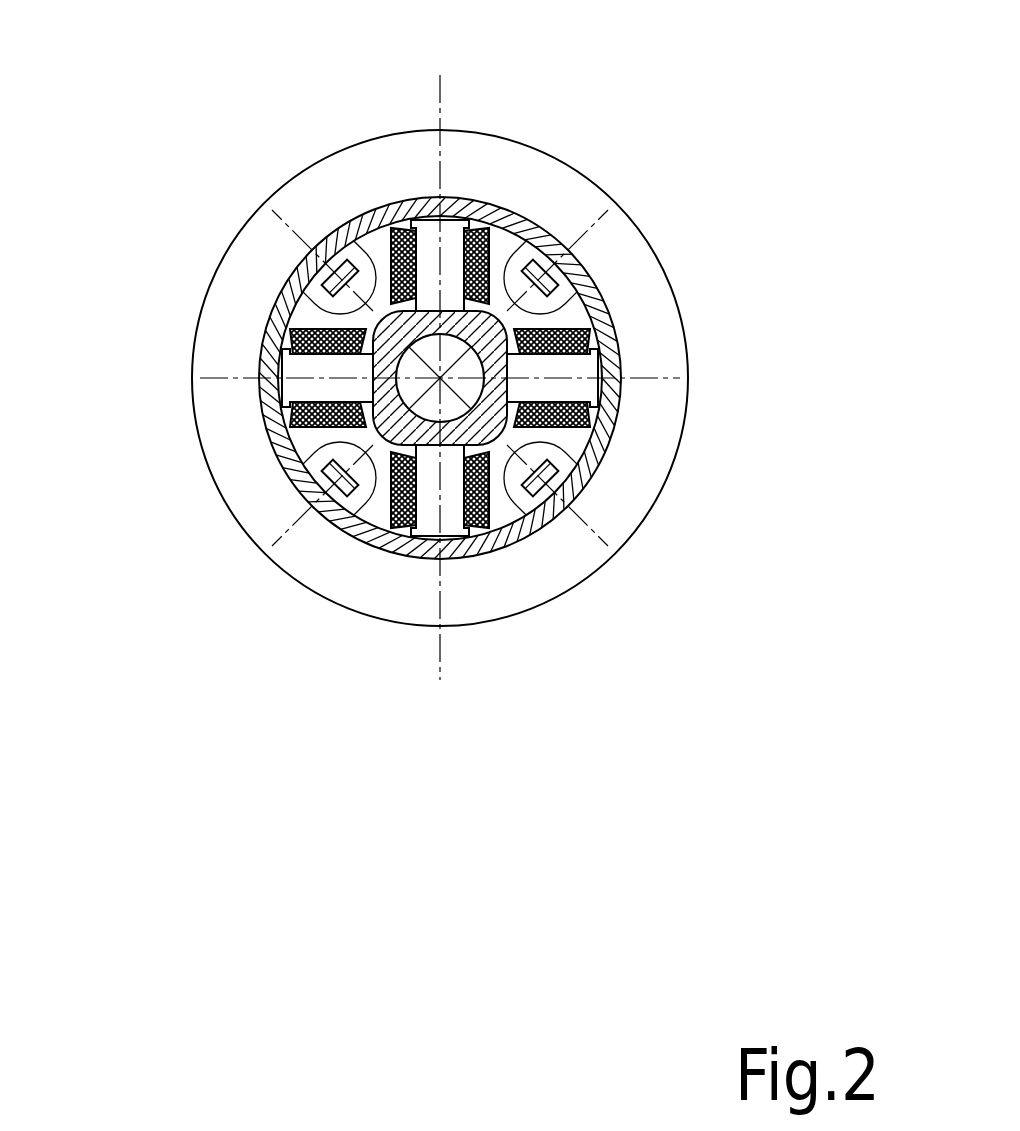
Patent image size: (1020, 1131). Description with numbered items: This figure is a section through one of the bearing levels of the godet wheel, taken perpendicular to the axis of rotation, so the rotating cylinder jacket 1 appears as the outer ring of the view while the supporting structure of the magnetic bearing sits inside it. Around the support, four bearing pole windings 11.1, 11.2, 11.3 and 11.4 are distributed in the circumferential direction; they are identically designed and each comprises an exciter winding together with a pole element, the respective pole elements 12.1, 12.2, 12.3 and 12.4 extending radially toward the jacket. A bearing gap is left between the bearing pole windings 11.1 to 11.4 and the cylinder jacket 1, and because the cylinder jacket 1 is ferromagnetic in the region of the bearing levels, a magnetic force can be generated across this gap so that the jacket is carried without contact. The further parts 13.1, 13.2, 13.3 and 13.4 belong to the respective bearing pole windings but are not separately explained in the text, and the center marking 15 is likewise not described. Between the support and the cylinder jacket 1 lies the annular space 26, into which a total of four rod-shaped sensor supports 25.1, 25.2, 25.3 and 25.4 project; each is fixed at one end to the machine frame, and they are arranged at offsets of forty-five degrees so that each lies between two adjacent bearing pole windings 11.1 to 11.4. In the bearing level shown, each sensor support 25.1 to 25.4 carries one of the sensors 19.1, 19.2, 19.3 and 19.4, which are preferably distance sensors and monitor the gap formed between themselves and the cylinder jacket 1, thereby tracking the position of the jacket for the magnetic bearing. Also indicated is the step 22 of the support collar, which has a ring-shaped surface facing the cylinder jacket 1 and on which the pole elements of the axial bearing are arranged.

The cylinder jacket 1 is at (445, 377).
The bearing pole winding 11.1 is at (389, 157).
The bearing pole winding 11.2 is at (680, 378).
The bearing pole winding 11.3 is at (477, 600).
The bearing pole winding 11.4 is at (204, 378).
The pole element 12.1 is at (460, 158).
The pole element 12.2 is at (675, 433).
The pole element 12.3 is at (412, 596).
The pole element 12.4 is at (208, 343).
The first sensor 13.1 is at (589, 174).
The second sensor 13.2 is at (664, 524).
The third sensor 13.3 is at (303, 592).
The fourth sensor 13.4 is at (217, 264).
The axis / center line 15 is at (522, 343).
The sensor 19.1 is at (642, 252).
The sensor 19.2 is at (616, 551).
The sensor 19.3 is at (254, 544).
The sensor 19.4 is at (246, 220).
The step 22 is at (440, 328).
The sensor support 25.1 is at (633, 295).
The sensor support 25.2 is at (539, 554).
The sensor support 25.3 is at (248, 461).
The sensor support 25.4 is at (326, 218).
The annular space 26 is at (616, 192).